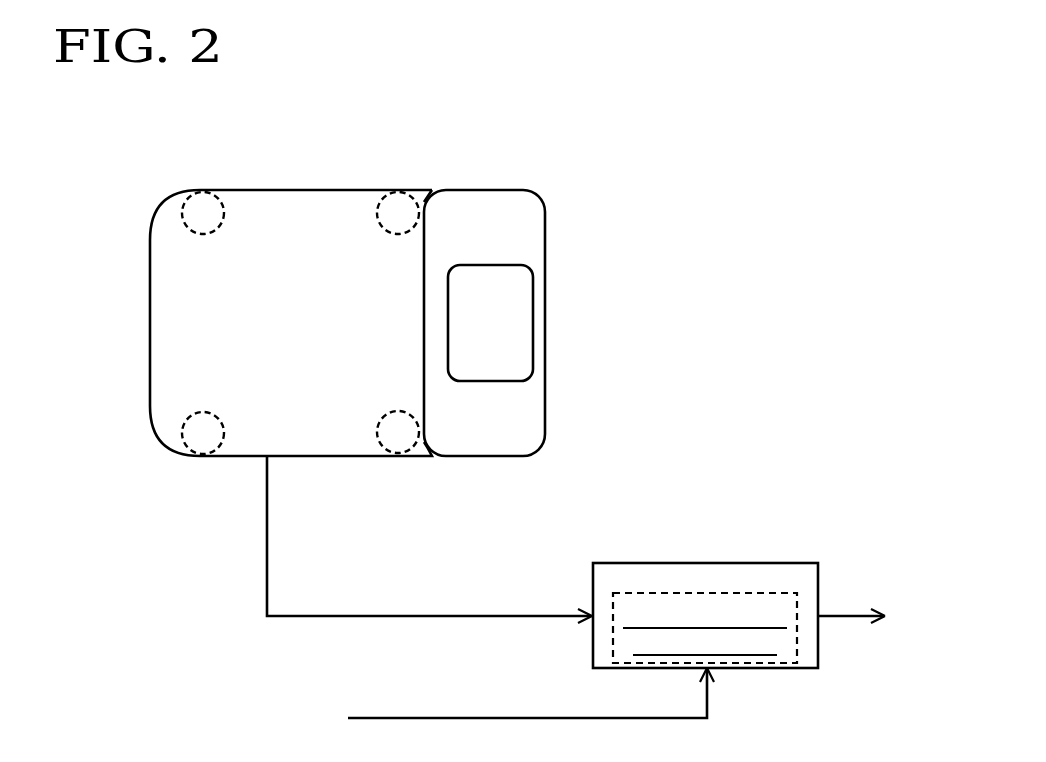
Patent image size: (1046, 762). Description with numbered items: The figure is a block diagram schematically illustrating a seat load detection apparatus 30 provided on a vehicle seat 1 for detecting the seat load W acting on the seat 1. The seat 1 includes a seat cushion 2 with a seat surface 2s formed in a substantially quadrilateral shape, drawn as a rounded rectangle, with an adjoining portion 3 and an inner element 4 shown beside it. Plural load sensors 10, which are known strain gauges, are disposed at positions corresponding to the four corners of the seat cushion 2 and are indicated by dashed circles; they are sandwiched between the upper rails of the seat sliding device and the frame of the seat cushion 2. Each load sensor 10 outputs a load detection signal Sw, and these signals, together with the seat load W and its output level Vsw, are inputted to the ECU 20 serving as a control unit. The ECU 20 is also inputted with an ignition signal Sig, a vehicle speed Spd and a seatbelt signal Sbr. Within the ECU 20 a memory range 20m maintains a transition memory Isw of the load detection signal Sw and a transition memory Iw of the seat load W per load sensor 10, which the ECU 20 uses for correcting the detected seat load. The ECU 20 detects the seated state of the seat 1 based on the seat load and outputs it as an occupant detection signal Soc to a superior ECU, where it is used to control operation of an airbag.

The seat 1 is at (148, 121).
The seat cushion 2 is at (150, 309).
The seat surface 2s is at (318, 337).
The cab / driver section 3 is at (547, 246).
The driver seat 4 is at (492, 265).
The load sensors 10 is at (187, 190).
The ECU 20 is at (760, 563).
The memory range 20m is at (757, 665).
The seat load detection apparatus 30 is at (148, 692).